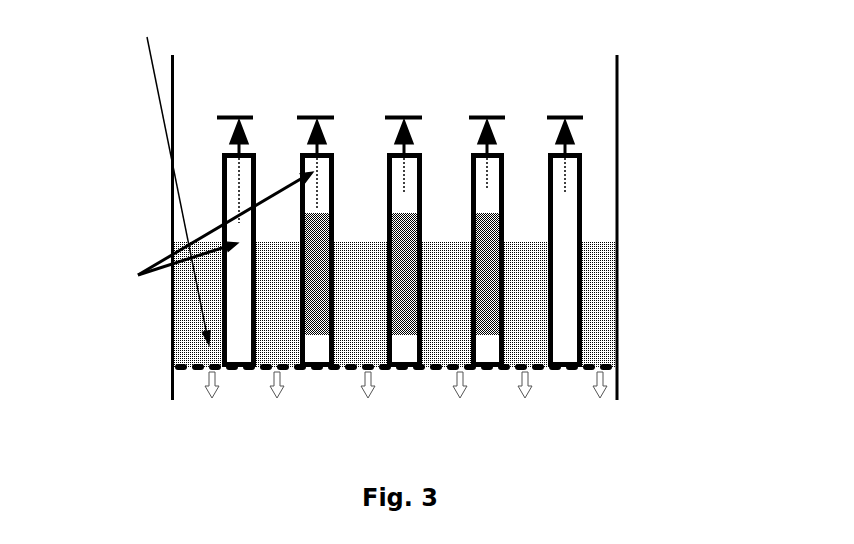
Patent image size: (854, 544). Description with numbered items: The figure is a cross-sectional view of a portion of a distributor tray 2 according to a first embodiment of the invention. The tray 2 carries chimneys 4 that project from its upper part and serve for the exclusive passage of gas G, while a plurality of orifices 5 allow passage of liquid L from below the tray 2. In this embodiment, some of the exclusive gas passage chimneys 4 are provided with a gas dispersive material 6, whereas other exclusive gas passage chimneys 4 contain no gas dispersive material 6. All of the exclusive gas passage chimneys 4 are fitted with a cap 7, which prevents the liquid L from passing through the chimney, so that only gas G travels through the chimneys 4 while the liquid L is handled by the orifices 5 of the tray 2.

The distributor tray 2 is at (530, 92).
The chimney 4 is at (562, 297).
The orifice 5 is at (425, 373).
The gas dispersive material 6 is at (483, 242).
The cap 7 is at (585, 116).
The gas G is at (200, 236).
The liquid L is at (161, 177).